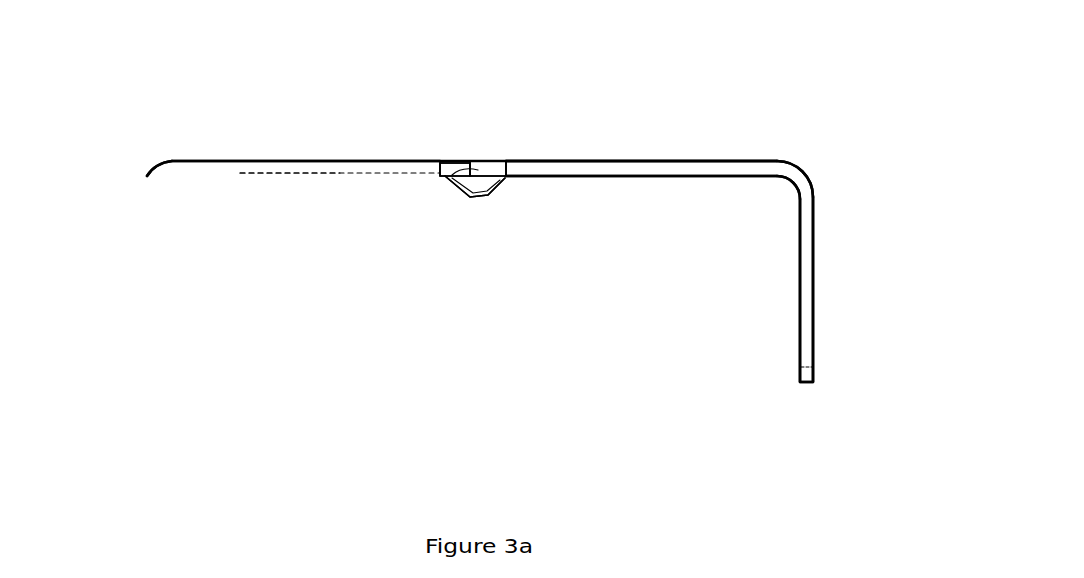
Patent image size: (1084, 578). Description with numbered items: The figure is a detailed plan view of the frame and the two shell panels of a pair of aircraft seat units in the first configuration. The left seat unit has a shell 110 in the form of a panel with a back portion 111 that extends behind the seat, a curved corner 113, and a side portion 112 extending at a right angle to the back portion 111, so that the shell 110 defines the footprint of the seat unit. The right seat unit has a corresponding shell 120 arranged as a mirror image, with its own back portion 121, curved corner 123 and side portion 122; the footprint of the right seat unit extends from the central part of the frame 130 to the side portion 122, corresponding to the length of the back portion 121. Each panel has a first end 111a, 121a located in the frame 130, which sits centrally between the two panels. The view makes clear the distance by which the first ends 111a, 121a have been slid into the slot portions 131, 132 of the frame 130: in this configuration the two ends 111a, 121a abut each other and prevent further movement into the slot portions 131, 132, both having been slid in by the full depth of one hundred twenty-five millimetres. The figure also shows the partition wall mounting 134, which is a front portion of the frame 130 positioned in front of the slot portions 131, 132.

The shell 110 is at (172, 90).
The back portion 111 is at (290, 165).
The first end 111a is at (443, 176).
The side portion 112 is at (138, 291).
The curved corner 113 is at (146, 178).
The shell 120 is at (845, 80).
The back portion 121 is at (653, 172).
The first end 121a is at (503, 180).
The side portion 122 is at (882, 315).
The curved corner 123 is at (860, 174).
The frame 130 is at (513, 92).
The slot portion 131 is at (452, 163).
The slot portion 132 is at (492, 167).
The partition wall mounting 134 is at (467, 186).